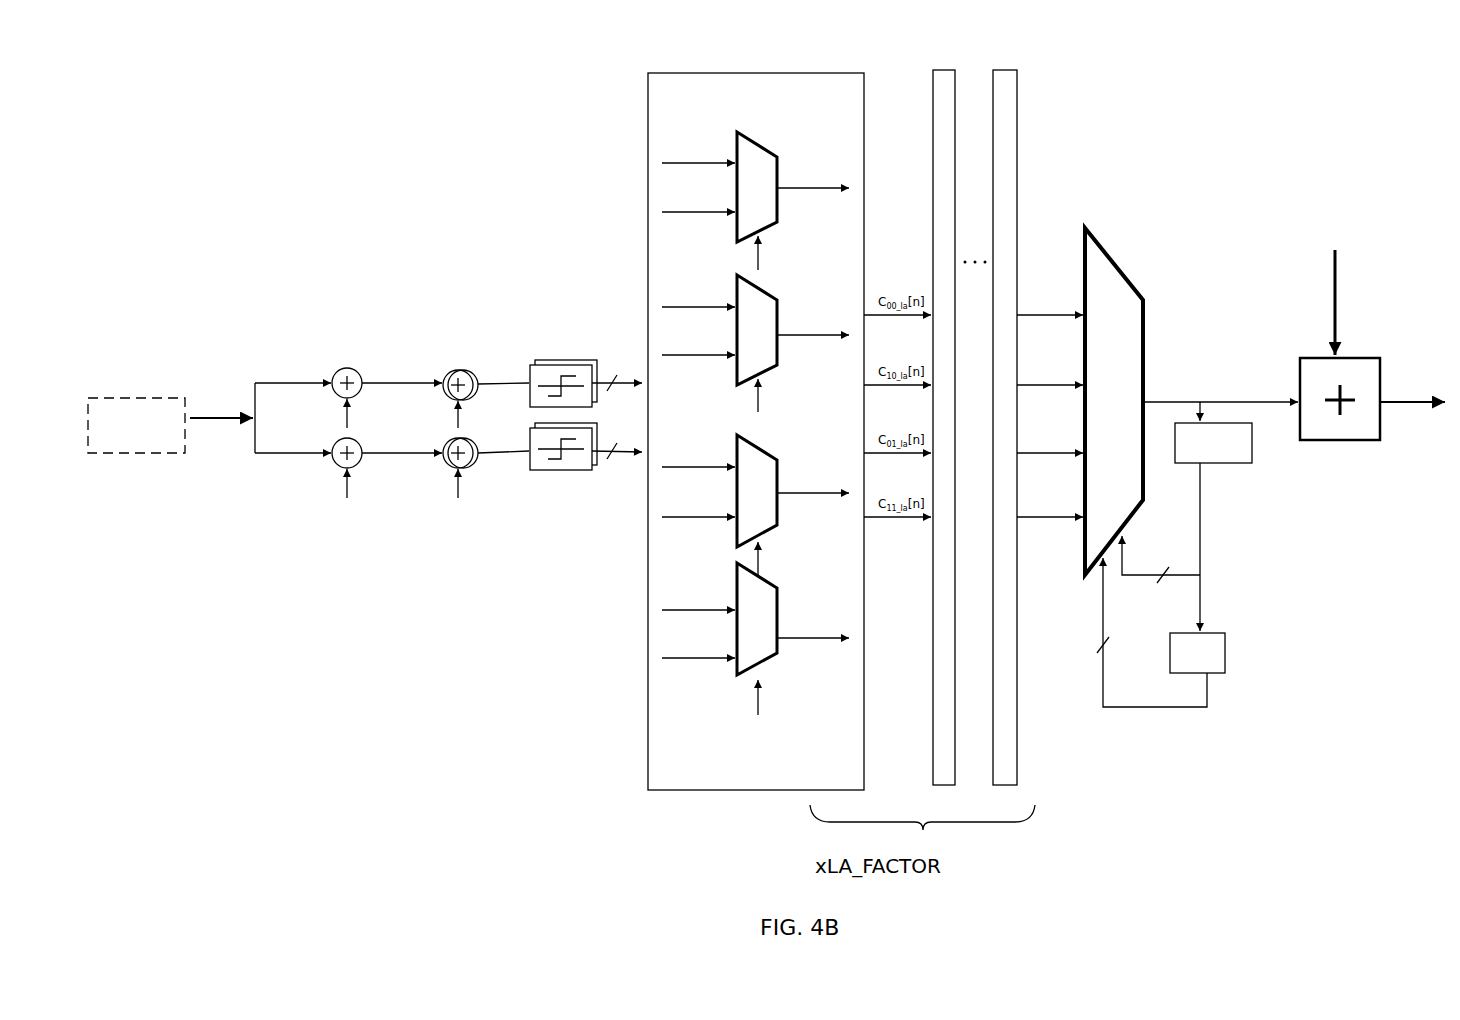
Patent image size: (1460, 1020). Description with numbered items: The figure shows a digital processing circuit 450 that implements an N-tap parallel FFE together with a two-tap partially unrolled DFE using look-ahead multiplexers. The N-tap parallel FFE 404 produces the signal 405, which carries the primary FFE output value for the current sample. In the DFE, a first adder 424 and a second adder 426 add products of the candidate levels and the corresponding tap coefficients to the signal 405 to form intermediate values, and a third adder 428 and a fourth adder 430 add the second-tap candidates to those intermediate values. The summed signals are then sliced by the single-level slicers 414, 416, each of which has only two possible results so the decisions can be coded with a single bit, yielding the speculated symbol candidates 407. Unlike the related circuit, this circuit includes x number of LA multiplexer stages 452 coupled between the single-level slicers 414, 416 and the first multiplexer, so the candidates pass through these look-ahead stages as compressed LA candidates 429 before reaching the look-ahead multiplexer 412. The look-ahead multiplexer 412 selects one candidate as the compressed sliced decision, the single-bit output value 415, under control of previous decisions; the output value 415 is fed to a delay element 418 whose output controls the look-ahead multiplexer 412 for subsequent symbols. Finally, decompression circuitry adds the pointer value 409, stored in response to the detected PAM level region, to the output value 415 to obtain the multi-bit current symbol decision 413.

The digital processing circuit 450 is at (178, 90).
The LA multiplexer stages 452 is at (643, 63).
The N-tap parallel FFE 404 is at (140, 426).
The signal 405 is at (232, 420).
The first adder 424 is at (357, 369).
The second adder 426 is at (364, 460).
The third adder 428 is at (468, 372).
The fourth adder 430 is at (478, 458).
The single-level slicers 414 is at (570, 365).
The single-level slicers 416 is at (578, 472).
The speculated symbol candidates 407 is at (592, 272).
The compressed LA candidates 429 is at (1058, 208).
The look-ahead multiplexer 412 is at (1125, 262).
The output value 415 is at (1266, 398).
The delay element 418 is at (1215, 463).
The pointer value 409 is at (1340, 292).
The current symbol decision 413 is at (1405, 402).